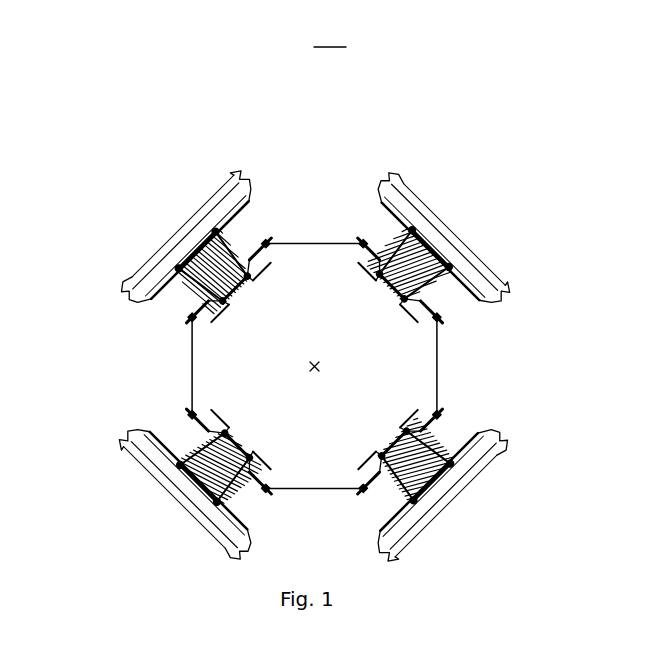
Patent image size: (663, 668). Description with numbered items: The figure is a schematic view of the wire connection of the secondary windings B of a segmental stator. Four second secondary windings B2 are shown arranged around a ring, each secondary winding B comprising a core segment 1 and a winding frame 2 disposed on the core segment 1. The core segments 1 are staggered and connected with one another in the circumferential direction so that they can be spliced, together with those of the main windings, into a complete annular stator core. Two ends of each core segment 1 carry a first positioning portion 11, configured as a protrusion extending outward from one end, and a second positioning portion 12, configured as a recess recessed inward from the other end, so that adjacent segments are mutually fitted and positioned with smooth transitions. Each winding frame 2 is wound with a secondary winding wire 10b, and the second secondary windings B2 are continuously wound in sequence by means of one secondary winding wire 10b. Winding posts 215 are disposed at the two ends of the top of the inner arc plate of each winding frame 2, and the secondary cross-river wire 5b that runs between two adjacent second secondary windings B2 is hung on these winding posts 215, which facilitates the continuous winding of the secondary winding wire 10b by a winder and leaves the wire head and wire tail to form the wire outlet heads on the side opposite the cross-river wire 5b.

The core segment 1 is at (470, 232).
The winding frame 2 is at (456, 283).
The secondary cross-river wire 5b is at (321, 243).
The secondary winding wire 10b is at (185, 296).
The first positioning portion 11 is at (387, 186).
The second positioning portion 12 is at (496, 294).
The winding post 215 is at (268, 242).
The second secondary winding B2 is at (306, 331).
The secondary winding B is at (330, 34).